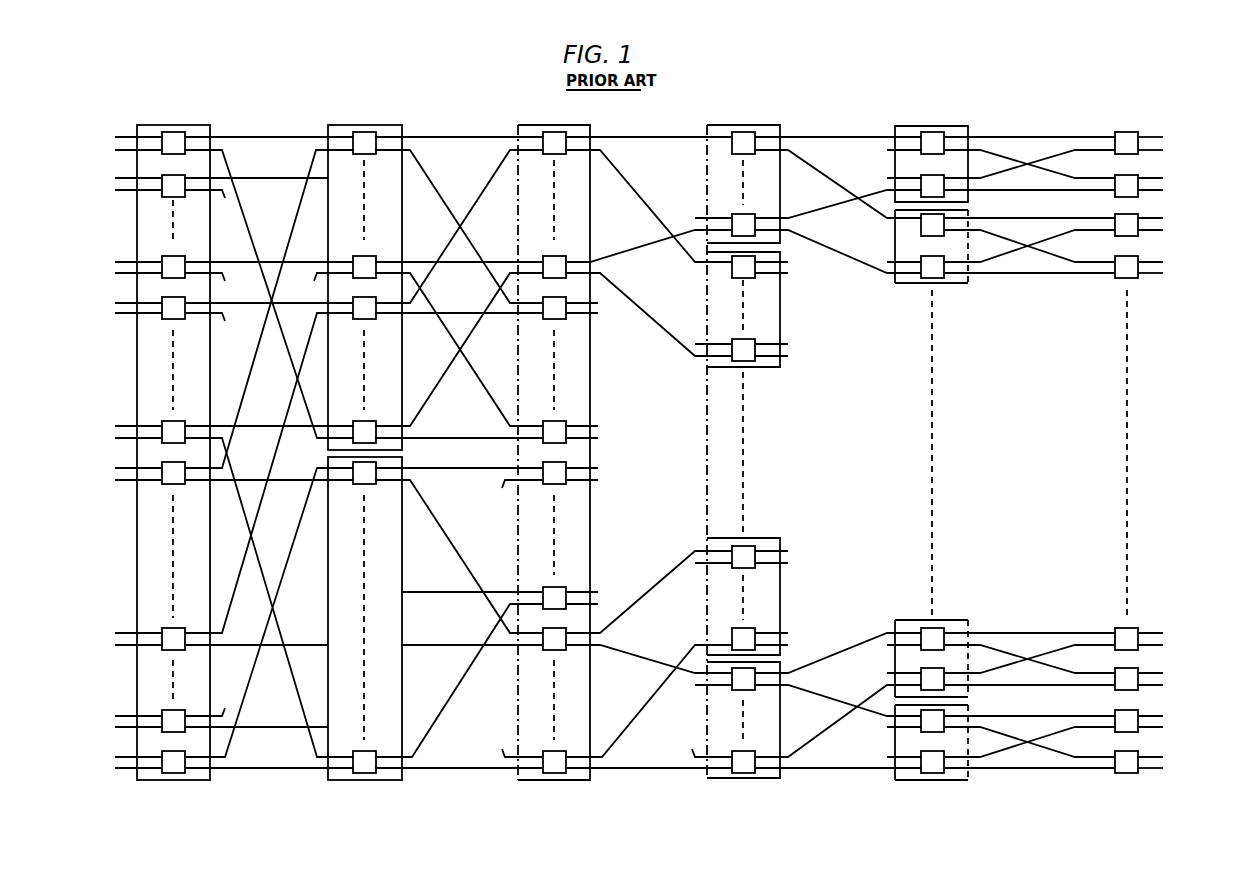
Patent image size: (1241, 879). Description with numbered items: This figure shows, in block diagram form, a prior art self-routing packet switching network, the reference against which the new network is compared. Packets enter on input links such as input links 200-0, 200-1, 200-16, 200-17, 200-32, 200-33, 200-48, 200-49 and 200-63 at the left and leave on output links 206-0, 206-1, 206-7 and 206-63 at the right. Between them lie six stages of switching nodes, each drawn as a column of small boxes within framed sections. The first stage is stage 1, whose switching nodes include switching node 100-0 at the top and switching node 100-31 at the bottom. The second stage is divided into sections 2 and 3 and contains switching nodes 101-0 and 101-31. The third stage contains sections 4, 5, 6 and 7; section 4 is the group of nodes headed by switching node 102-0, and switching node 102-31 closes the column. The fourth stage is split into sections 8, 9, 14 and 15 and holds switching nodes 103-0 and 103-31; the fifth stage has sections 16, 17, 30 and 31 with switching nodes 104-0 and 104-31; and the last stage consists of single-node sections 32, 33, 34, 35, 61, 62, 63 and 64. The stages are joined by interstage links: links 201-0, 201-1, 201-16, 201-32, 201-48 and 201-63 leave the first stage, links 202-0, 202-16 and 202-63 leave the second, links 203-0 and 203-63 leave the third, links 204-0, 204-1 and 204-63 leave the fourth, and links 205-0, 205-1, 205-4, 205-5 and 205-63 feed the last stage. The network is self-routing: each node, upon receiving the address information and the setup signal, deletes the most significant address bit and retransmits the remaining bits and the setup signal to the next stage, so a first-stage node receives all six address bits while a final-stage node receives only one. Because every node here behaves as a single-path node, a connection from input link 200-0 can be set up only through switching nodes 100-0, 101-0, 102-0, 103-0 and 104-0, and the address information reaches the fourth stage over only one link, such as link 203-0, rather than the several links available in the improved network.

The stage 1 is at (165, 126).
The second switching stage upper sub-network 2 is at (356, 126).
The section 3 is at (328, 529).
The section 4 is at (544, 126).
The third stage sub-network 5 is at (518, 350).
The stage 6 is at (518, 533).
The third stage sub-network 7 is at (518, 675).
The fourth stage sub-network 8 is at (736, 126).
The fourth stage sub-network 9 is at (708, 294).
The fourth stage sub-network 14 is at (714, 533).
The fourth stage sub-network 15 is at (714, 711).
The fifth stage sub-network 16 is at (934, 126).
The fifth stage sub-network 17 is at (899, 256).
The fifth stage sub-network 30 is at (921, 611).
The fifth stage sub-network 31 is at (898, 742).
The sixth stage switching element 32 is at (1130, 132).
The sixth stage switching element 33 is at (1116, 176).
The sixth stage switching element 34 is at (1116, 217).
The sixth stage switching element 35 is at (1116, 257).
The sixth stage switching element 61 is at (1122, 618).
The sixth stage switching element 62 is at (1121, 676).
The sixth stage switching element 63 is at (1121, 716).
The sixth stage switching element 64 is at (1121, 757).
The switching node 100-0 is at (172, 132).
The first stage switching element 100-31 is at (172, 774).
The switching node 101-0 is at (364, 132).
The second stage switching element 101-31 is at (363, 774).
The switching node 102-0 is at (554, 132).
The third stage switching element 102-31 is at (553, 774).
The switching node 103-0 is at (742, 132).
The fourth stage switching element 103-31 is at (742, 774).
The switching node 104-0 is at (934, 132).
The fifth stage switching element 104-31 is at (930, 774).
The input link 200-0 is at (114, 136).
The input link 200-1 is at (114, 150).
The input link 200-16 is at (121, 302).
The input link 200-17 is at (121, 313).
The input link 200-32 is at (121, 468).
The input link 200-33 is at (121, 480).
The input link 200-48 is at (121, 633).
The input link 200-49 is at (121, 645).
The input link 200-63 is at (121, 768).
The first interstage link 201-0 is at (227, 137).
The first interstage link 201-1 is at (228, 158).
The first interstage link 201-16 is at (250, 303).
The first interstage link 201-32 is at (228, 454).
The first interstage link 201-48 is at (230, 637).
The first interstage link 201-63 is at (300, 768).
The link 202-0 is at (415, 137).
The second interstage link 202-16 is at (440, 270).
The second interstage link 202-63 is at (417, 774).
The link 203-0 is at (607, 137).
The third interstage link 203-63 is at (611, 774).
The fourth interstage link 204-0 is at (797, 137).
The fourth interstage link 204-1 is at (809, 170).
The fourth interstage link 204-63 is at (801, 774).
The fifth interstage link 205-0 is at (997, 137).
The fifth interstage link 205-1 is at (1062, 178).
The fifth interstage link 205-4 is at (987, 224).
The fifth interstage link 205-5 is at (992, 244).
The fifth interstage link 205-63 is at (987, 774).
The output link 206-0 is at (1157, 137).
The output link 206-1 is at (1159, 146).
The output link 206-7 is at (1159, 271).
The output link 206-63 is at (1122, 775).